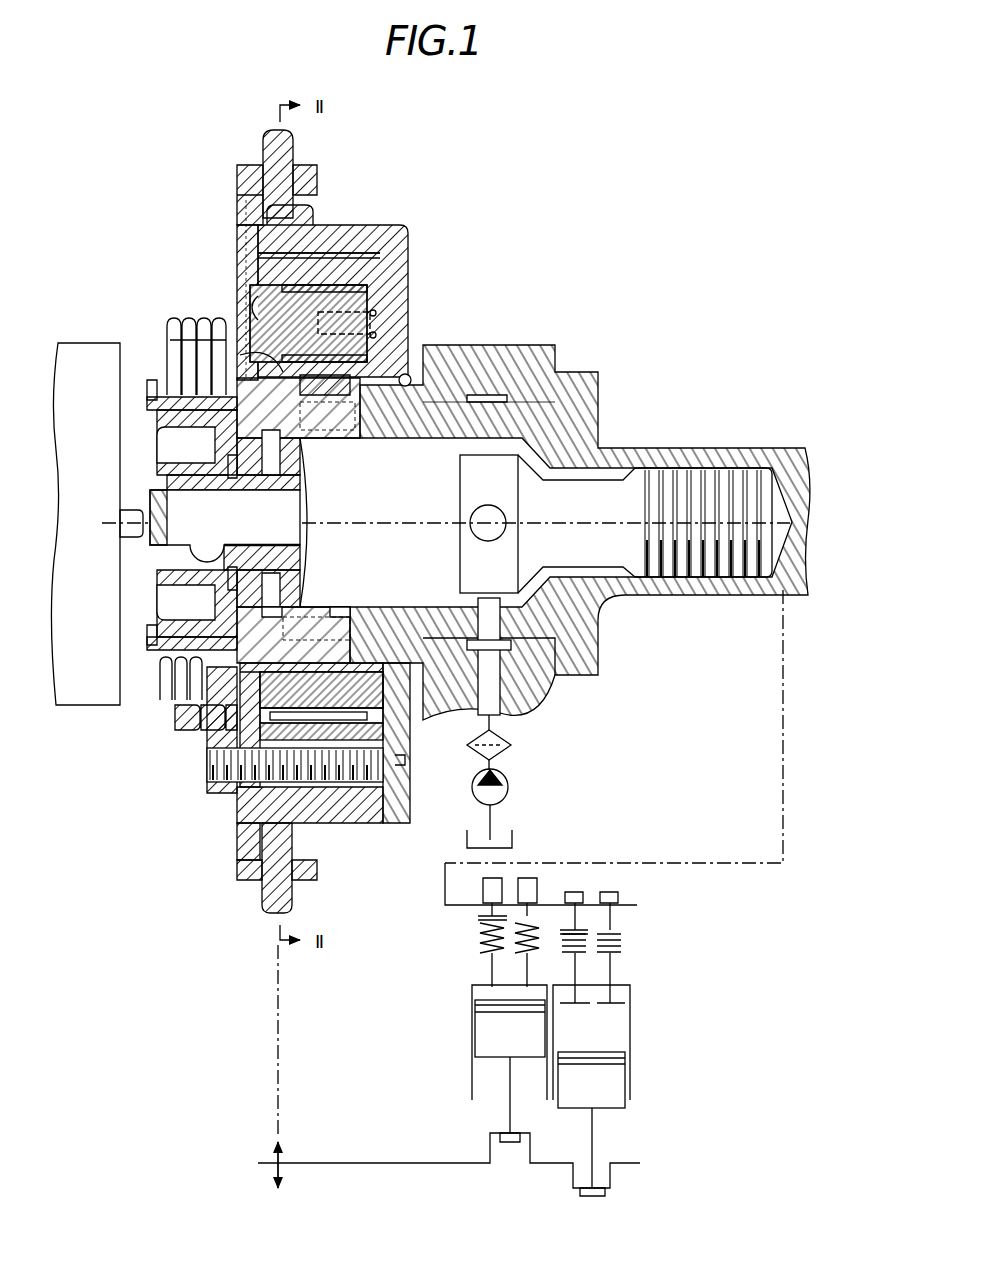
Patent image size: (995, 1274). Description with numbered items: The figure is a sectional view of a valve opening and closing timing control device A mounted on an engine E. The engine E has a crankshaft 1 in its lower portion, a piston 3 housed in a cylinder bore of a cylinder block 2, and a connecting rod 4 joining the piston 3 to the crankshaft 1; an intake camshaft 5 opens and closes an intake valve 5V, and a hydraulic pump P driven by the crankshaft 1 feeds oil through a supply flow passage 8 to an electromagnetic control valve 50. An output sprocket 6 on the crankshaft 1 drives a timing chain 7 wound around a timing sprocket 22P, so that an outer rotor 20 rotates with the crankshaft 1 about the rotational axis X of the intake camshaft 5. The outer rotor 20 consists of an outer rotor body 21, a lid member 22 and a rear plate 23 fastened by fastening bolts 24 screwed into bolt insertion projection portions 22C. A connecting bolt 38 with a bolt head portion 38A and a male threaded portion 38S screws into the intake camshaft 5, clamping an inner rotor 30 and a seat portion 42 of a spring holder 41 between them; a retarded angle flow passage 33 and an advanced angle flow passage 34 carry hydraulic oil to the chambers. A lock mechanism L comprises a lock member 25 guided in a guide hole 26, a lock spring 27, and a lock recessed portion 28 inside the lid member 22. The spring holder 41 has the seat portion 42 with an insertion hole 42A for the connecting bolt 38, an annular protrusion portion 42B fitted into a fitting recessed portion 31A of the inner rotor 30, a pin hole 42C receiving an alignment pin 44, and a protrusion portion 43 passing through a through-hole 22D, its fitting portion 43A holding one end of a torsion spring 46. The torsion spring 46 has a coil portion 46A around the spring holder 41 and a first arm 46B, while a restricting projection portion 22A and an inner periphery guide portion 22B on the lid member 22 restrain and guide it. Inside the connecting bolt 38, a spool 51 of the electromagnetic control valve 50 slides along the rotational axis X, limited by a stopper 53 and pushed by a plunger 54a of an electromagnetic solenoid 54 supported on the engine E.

The crankshaft 1 is at (365, 1162).
The cylinder block 2 is at (632, 1017).
The piston 3 is at (480, 1025).
The connecting rod 4 is at (507, 1097).
The intake camshaft 5 is at (550, 903).
The intake valve 5V is at (615, 1005).
The output sprocket 6 is at (273, 1153).
The timing chain 7 is at (280, 1033).
The supply flow passage 8 is at (497, 683).
The outer rotor 20 is at (233, 139).
The outer rotor body 21 is at (322, 823).
The lid member 22 is at (237, 206).
The restricting projection portion 22A is at (237, 263).
The inner periphery guide portion 22B is at (207, 760).
The bolt insertion projection portion 22C is at (226, 807).
The through-hole 22D is at (150, 398).
The timing sprocket 22P is at (286, 139).
The rear plate 23 is at (393, 228).
The fastening bolt 24 is at (373, 770).
The lock member 25 is at (360, 303).
The guide hole 26 is at (288, 292).
The lock spring 27 is at (378, 333).
The lock recessed portion 28 is at (256, 307).
The inner rotor 30 is at (364, 252).
The fitting recessed portion 31A is at (278, 662).
The retarded angle flow passage 33 is at (225, 522).
The advanced angle flow passage 34 is at (364, 634).
The connecting bolt 38 is at (444, 448).
The bolt head portion 38A is at (217, 417).
The male threaded portion 38S is at (700, 470).
The spring holder 41 is at (147, 427).
The seat portion 42 is at (285, 645).
The insertion hole 42A is at (276, 642).
The annular protrusion portion 42B is at (273, 366).
The pin hole 42C is at (380, 523).
The protrusion portion 43 is at (155, 375).
The fitting portion 43A is at (153, 623).
The alignment pin 44 is at (467, 522).
The torsion spring 46 is at (183, 735).
The coil portion 46A is at (174, 694).
The first arm 46B is at (157, 672).
The electromagnetic control valve 50 is at (137, 576).
The spool 51 is at (300, 554).
The stopper 53 is at (227, 468).
The electromagnetic solenoid 54 is at (104, 341).
The plunger 54a is at (128, 543).
The valve opening and closing timing control device A is at (138, 128).
The engine E is at (592, 163).
The lock mechanism L is at (372, 294).
The hydraulic pump P is at (510, 787).
The rotational axis X is at (436, 522).